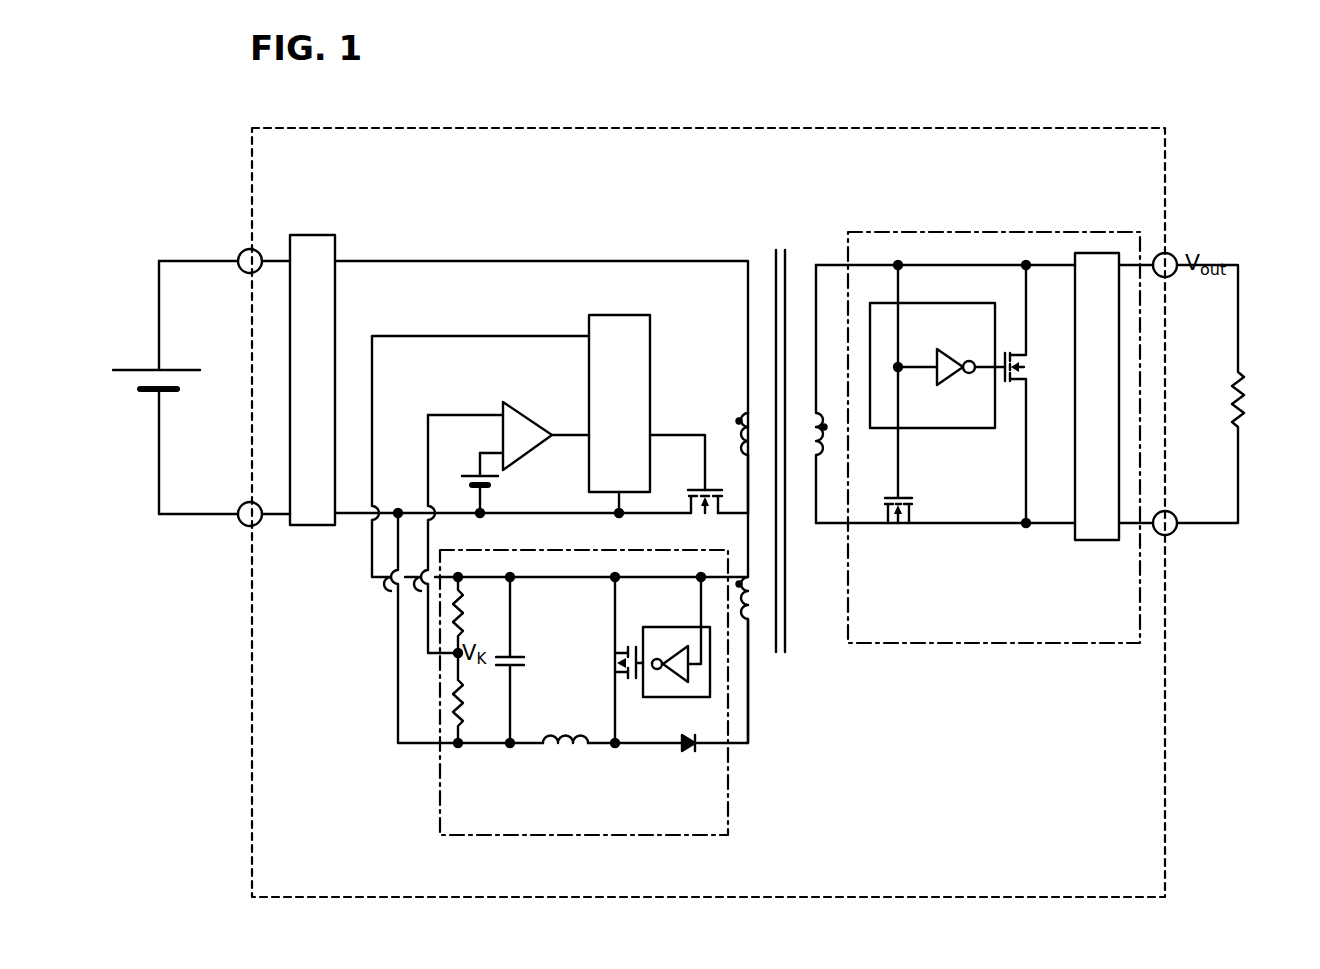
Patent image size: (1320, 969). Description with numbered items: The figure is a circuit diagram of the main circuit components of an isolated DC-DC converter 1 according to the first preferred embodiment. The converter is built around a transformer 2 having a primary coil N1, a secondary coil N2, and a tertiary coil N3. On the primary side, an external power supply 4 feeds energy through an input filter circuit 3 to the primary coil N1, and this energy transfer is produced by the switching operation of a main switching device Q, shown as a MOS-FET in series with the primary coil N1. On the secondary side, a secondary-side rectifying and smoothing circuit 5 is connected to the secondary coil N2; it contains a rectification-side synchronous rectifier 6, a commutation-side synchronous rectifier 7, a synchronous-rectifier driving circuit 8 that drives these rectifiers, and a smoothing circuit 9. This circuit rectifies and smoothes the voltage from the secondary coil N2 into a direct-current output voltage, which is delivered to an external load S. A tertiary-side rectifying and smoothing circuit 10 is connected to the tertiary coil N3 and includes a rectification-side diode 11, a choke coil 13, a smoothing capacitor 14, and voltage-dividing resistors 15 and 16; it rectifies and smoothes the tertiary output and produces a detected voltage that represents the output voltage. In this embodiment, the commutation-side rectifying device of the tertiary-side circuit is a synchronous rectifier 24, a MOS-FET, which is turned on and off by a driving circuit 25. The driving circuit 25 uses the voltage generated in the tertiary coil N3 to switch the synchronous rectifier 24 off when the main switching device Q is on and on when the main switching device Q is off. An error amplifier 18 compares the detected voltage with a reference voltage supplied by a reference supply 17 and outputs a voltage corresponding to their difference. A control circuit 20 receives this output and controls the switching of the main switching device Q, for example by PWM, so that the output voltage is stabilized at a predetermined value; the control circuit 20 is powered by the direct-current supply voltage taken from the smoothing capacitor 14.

The isolated DC-DC converter 1 is at (676, 128).
The transformer 2 is at (780, 247).
The input filter circuit 3 is at (312, 237).
The external power supply 4 is at (140, 370).
The secondary-side rectifying and smoothing circuit 5 is at (982, 234).
The rectification-side synchronous rectifier 6 is at (896, 526).
The commutation-side synchronous rectifier 7 is at (1013, 386).
The synchronous-rectifier driving circuit 8 is at (938, 430).
The smoothing circuit 9 is at (1092, 542).
The tertiary-side rectifying and smoothing circuit 10 is at (728, 797).
The rectification-side diode 11 is at (690, 752).
The choke coil 13 is at (570, 737).
The smoothing capacitor 14 is at (518, 654).
The voltage-dividing resistor 15 is at (463, 614).
The voltage-dividing resistor 16 is at (463, 696).
The reference supply 17 is at (486, 478).
The error amplifier 18 is at (526, 412).
The control circuit 20 is at (626, 316).
The synchronous rectifier 24 is at (624, 648).
The driving circuit 25 is at (676, 698).
The primary coil N1 is at (738, 443).
The secondary coil N2 is at (823, 455).
The tertiary coil N3 is at (750, 620).
The main switching device Q is at (708, 518).
The external load S is at (1244, 400).